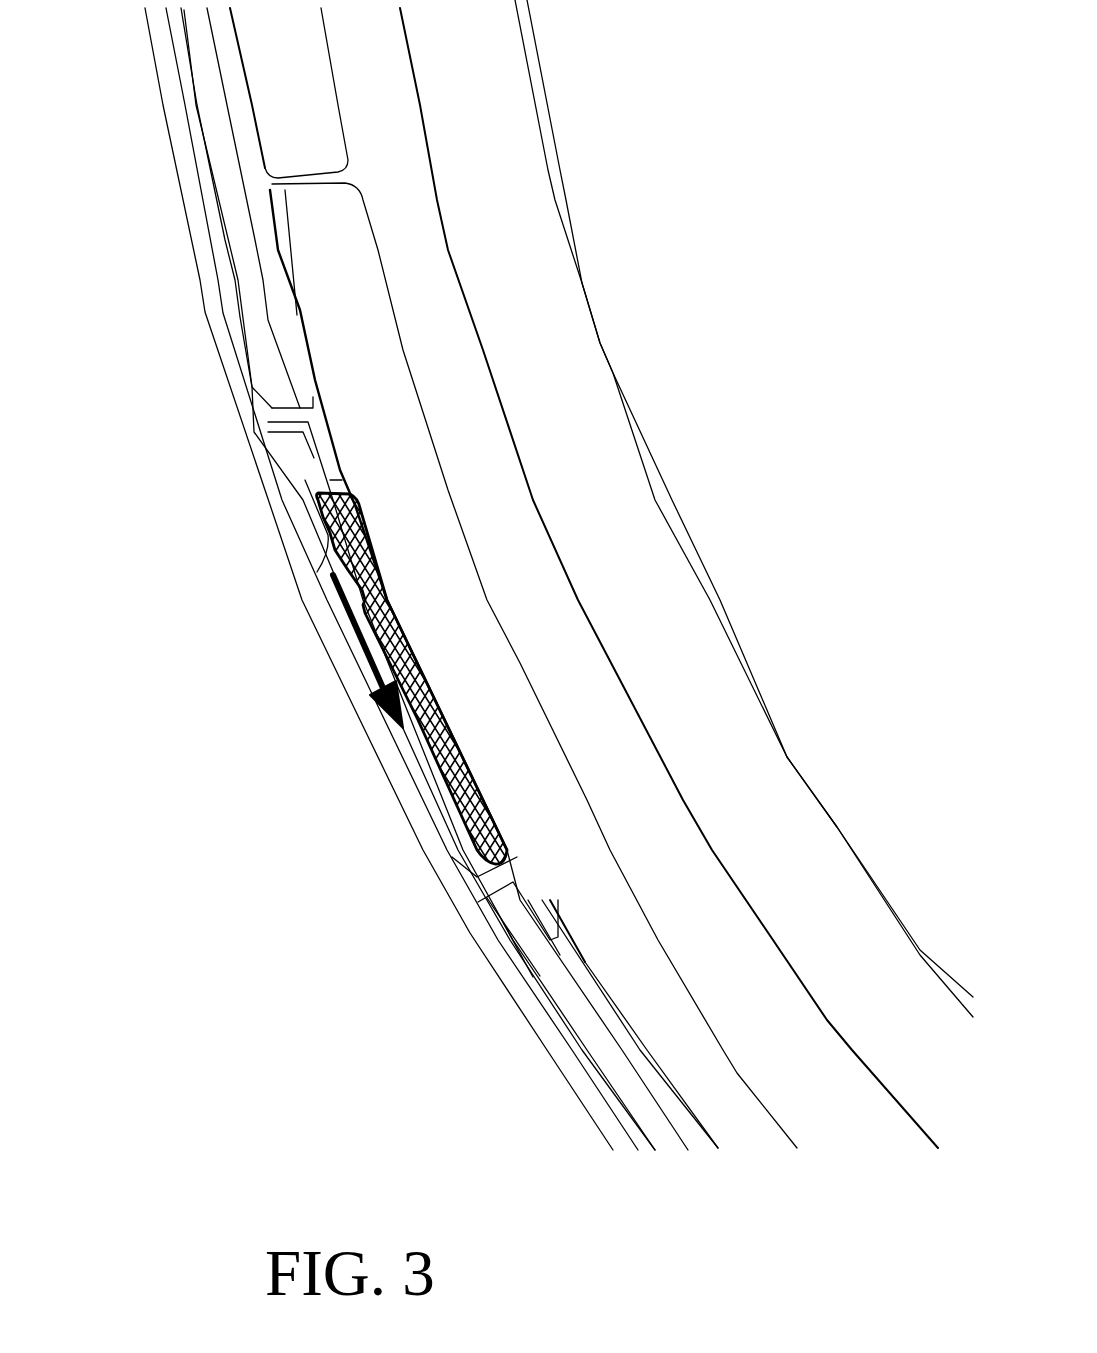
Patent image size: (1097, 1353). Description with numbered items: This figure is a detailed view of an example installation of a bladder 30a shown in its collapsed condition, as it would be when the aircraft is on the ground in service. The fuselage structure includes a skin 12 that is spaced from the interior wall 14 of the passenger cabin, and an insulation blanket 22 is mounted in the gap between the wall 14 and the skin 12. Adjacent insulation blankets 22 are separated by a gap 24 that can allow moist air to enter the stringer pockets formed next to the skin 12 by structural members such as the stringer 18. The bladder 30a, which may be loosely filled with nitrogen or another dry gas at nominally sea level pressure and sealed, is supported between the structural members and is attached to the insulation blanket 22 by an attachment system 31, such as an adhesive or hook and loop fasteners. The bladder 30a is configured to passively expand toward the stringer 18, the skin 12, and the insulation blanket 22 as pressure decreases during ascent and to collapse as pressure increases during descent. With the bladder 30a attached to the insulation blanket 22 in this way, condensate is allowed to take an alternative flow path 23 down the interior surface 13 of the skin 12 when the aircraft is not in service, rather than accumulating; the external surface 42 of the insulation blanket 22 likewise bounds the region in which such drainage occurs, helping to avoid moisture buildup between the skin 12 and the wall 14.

The skin 12 is at (202, 240).
The interior surface of the skin 13 is at (323, 499).
The wall 14 is at (720, 746).
The stringer 18 is at (298, 415).
The insulation blanket 22 is at (415, 505).
The alternative flow path 23 is at (346, 612).
The separation or gap 24 is at (342, 174).
The bladder 30a is at (433, 720).
The attachment system 31 is at (418, 684).
The external surface of the insulation blanket 42 is at (585, 962).